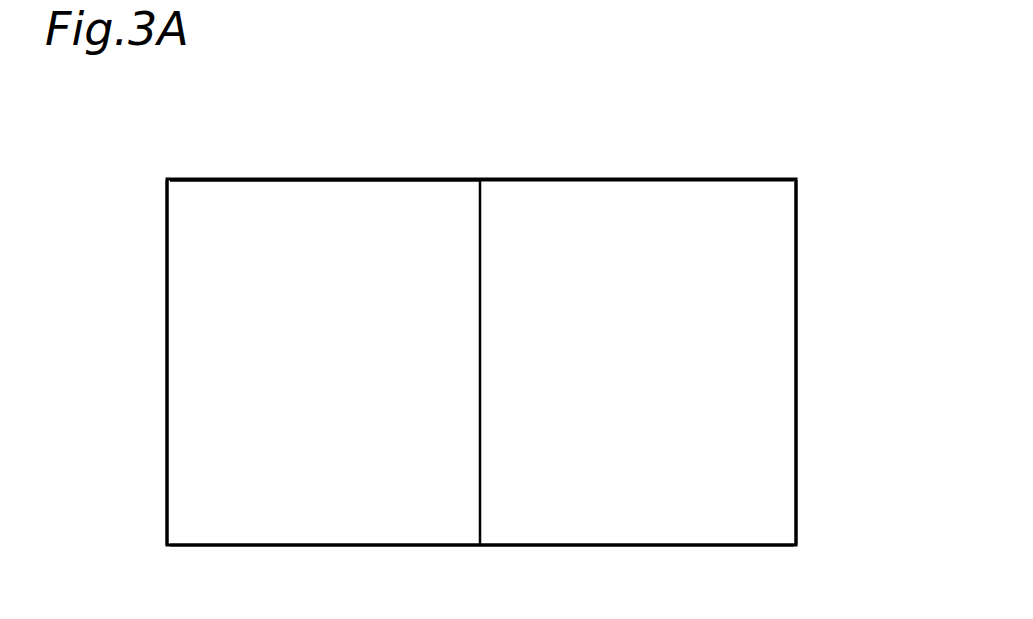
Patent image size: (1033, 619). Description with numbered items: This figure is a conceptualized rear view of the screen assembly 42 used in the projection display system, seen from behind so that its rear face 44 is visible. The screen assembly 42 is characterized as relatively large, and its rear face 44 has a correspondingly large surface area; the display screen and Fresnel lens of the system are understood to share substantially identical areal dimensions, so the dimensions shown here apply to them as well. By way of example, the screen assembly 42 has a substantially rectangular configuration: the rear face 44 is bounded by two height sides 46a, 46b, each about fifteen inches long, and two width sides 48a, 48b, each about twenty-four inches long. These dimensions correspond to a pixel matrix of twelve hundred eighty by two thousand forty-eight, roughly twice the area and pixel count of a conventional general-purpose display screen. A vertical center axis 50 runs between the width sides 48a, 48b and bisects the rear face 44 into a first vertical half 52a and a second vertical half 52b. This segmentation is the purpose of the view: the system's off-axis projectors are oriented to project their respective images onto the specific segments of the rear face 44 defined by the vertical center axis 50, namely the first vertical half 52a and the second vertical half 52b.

The screen assembly 42 is at (796, 228).
The rear face 44 is at (270, 200).
The height side 46a is at (165, 240).
The height side 46b is at (796, 353).
The width side 48a is at (372, 178).
The width side 48b is at (395, 546).
The vertical center axis 50 is at (481, 322).
The first vertical half 52a is at (353, 378).
The second vertical half 52b is at (668, 378).